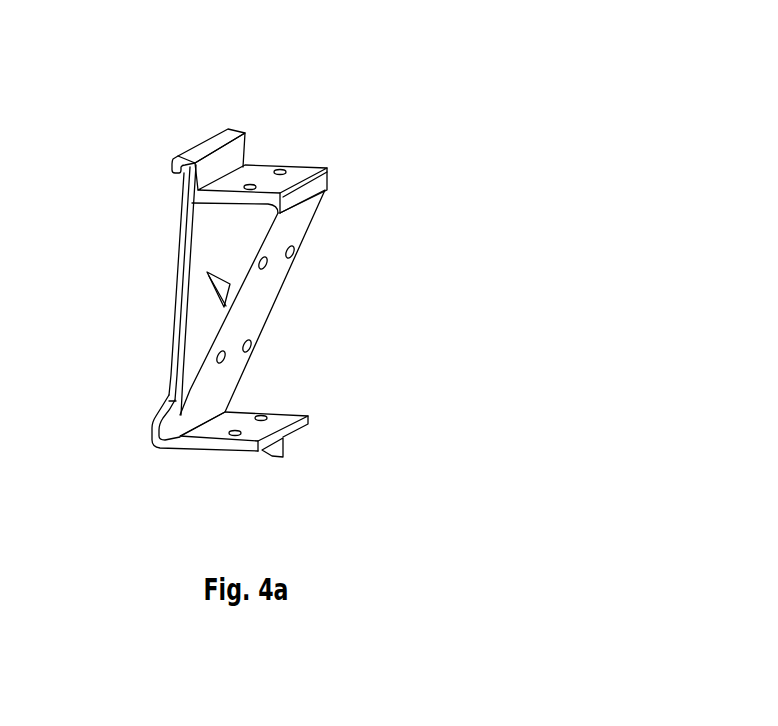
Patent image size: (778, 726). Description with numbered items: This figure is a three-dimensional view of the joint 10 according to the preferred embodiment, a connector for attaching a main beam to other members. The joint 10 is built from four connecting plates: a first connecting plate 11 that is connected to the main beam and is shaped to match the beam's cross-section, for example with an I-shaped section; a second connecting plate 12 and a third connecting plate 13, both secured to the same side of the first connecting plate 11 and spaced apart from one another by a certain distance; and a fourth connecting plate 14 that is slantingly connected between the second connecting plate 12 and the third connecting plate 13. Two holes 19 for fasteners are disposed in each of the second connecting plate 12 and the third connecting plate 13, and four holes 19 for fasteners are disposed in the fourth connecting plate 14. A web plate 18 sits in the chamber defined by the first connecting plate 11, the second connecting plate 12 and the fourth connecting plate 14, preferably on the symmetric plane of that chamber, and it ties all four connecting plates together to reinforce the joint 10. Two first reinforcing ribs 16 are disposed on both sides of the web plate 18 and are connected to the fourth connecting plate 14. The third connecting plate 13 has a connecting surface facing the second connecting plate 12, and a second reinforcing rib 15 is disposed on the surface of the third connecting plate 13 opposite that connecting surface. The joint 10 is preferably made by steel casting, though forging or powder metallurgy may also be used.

The joint 10 is at (247, 269).
The first connecting plate 11 is at (185, 210).
The second connecting plate 12 is at (300, 174).
The third connecting plate 13 is at (273, 427).
The fourth connecting plate 14 is at (260, 305).
The second reinforcing rib 15 is at (275, 452).
The first reinforcing rib 16 is at (228, 286).
The web plate 18 is at (218, 310).
The holes 19 is at (284, 163).